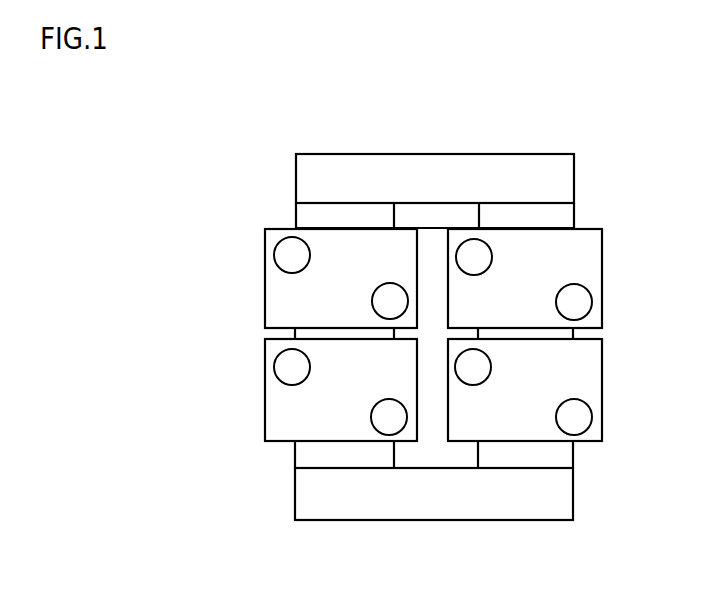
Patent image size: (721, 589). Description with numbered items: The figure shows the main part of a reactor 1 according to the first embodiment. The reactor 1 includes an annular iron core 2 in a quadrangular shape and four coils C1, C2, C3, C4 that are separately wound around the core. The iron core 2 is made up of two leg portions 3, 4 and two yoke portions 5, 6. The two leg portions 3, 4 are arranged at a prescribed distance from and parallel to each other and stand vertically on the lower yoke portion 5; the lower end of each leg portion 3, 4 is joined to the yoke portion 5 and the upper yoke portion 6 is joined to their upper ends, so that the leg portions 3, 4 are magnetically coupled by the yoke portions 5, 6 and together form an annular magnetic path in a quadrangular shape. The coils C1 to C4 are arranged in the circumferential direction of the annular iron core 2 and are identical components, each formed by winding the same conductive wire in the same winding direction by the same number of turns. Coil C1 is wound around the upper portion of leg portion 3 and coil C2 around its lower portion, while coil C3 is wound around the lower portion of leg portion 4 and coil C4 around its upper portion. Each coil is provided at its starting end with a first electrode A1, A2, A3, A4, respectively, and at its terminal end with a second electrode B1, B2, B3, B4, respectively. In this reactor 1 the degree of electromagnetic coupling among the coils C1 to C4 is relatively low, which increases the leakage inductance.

The reactor 1 is at (265, 106).
The annular iron core 2 is at (455, 503).
The leg portion 3 is at (310, 216).
The leg portion 4 is at (562, 218).
The yoke portion 5 is at (560, 494).
The yoke portion 6 is at (563, 179).
The coil C1 is at (314, 278).
The coil C2 is at (314, 390).
The coil C3 is at (550, 390).
The coil C4 is at (550, 278).
The first electrode A1 is at (292, 255).
The second electrode B1 is at (390, 301).
The first electrode A2 is at (292, 367).
The second electrode B2 is at (389, 417).
The first electrode A3 is at (574, 417).
The second electrode B3 is at (473, 367).
The first electrode A4 is at (574, 302).
The second electrode B4 is at (474, 257).